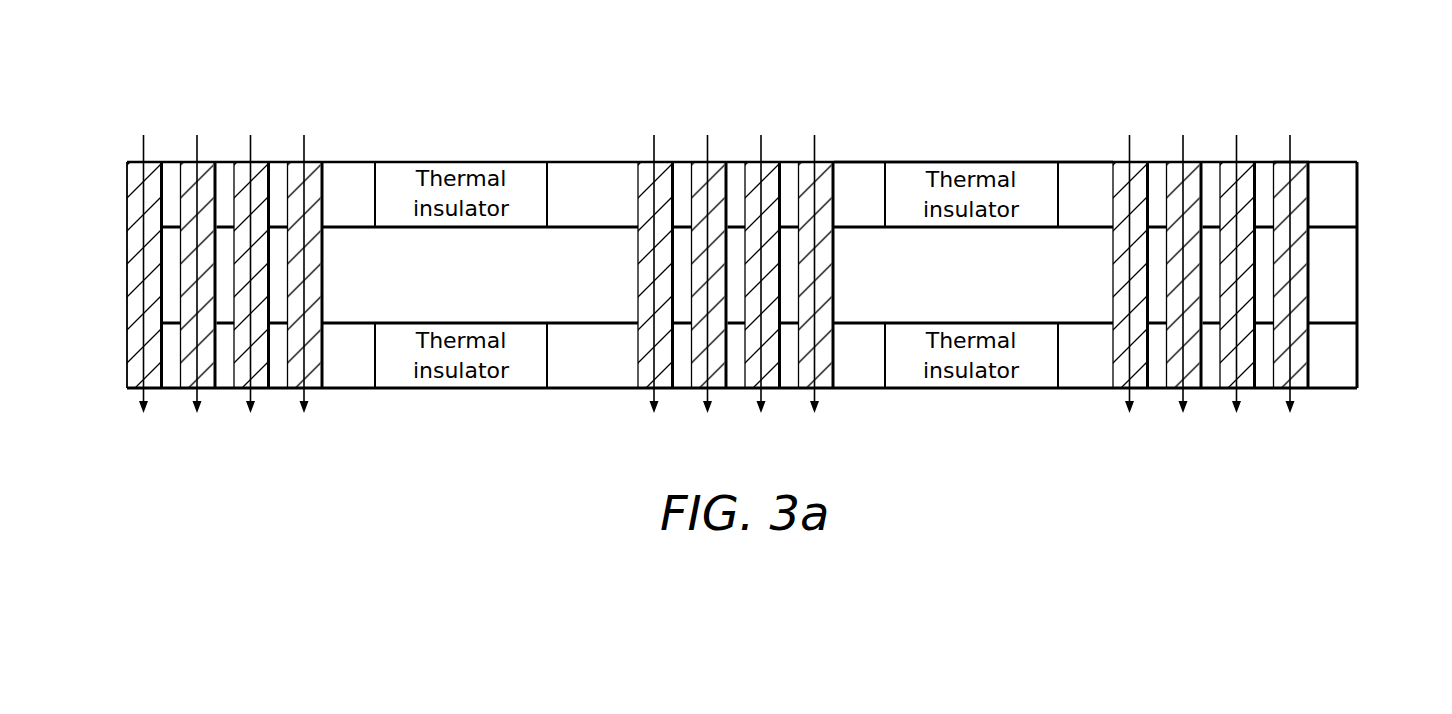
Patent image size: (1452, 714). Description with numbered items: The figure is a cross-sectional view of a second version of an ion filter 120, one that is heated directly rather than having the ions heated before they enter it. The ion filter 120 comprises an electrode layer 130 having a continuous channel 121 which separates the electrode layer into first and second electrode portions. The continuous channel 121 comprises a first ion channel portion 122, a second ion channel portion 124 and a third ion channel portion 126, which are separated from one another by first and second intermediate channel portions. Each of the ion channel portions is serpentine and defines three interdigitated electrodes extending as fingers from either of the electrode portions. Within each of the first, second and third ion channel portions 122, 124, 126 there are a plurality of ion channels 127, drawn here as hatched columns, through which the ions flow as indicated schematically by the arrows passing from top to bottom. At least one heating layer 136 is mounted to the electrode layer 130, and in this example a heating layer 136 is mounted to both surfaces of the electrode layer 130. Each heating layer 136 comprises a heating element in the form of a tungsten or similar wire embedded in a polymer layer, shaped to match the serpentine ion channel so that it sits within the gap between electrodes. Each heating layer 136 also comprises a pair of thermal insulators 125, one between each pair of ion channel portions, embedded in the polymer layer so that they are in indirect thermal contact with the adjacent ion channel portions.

The ion filter 120 is at (325, 476).
The continuous channel 121 is at (1299, 152).
The first ion channel portion 122 is at (220, 114).
The second ion channel portion 124 is at (730, 113).
The thermal insulator 125 is at (968, 152).
The third ion channel portion 126 is at (1207, 113).
The ion channel 127 is at (313, 372).
The electrode layer 130 is at (483, 287).
The heating layer 136 is at (1366, 190).